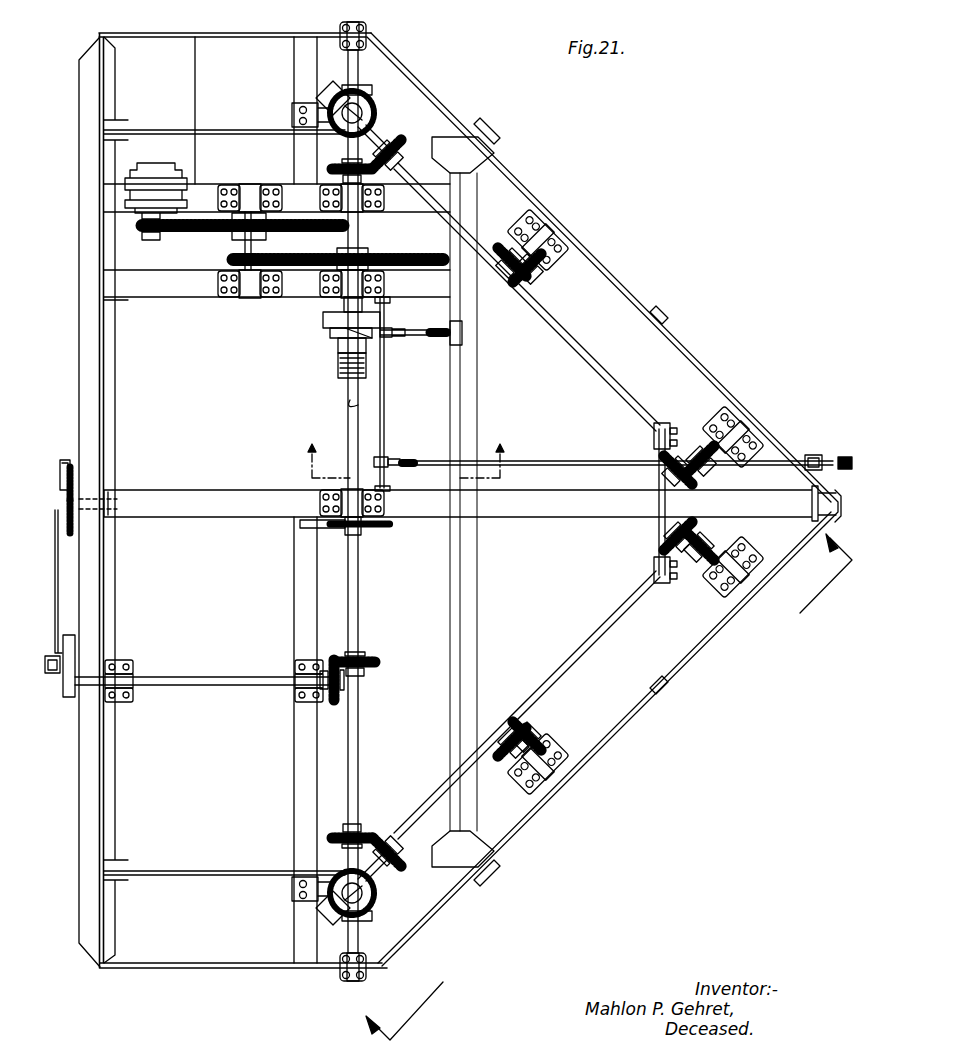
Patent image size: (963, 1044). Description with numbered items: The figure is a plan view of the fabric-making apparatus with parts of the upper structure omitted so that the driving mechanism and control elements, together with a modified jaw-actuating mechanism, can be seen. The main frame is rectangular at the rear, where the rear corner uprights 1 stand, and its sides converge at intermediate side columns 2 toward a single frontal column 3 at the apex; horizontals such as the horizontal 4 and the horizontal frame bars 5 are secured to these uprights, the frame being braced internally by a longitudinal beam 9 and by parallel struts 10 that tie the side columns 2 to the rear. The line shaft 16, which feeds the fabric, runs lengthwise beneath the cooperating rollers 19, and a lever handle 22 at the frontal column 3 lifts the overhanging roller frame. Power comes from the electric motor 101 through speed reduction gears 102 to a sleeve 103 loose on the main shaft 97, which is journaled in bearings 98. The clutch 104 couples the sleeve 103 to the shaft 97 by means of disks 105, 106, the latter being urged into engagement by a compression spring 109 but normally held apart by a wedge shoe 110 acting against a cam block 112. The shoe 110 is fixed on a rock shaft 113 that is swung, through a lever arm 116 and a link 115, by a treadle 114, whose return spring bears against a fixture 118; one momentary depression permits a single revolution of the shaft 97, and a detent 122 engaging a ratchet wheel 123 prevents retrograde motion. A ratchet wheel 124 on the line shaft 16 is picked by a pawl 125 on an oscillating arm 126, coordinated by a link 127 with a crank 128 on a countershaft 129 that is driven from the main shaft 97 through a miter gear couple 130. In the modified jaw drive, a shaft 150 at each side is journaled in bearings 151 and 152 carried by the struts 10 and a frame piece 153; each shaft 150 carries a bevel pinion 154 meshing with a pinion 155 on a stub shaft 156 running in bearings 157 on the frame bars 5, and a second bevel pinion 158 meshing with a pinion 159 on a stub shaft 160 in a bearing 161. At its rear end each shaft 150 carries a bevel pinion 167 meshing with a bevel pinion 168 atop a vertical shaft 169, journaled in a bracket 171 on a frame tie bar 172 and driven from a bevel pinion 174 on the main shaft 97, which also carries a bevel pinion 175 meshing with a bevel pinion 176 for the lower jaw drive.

The rear corner uprights 1 is at (140, 40).
The intermediate side columns 2 is at (478, 150).
The frontal column 3 is at (838, 512).
The horizontal 4 is at (610, 276).
The horizontal frame bars 5 is at (246, 34).
The longitudinal beam 9 is at (128, 491).
The parallel struts 10 is at (265, 133).
The line shaft 16 is at (115, 515).
The cooperating rollers 19 is at (405, 453).
The lever handle 22 is at (609, 787).
The main shaft 97 is at (360, 70).
The bearings 98 is at (366, 34).
The electric motor 101 is at (160, 165).
The speed reduction gears 102 is at (230, 260).
The sleeve 103 is at (362, 243).
The clutch 104 is at (364, 402).
The clutch disk 105 is at (322, 326).
The clutch disk 106 is at (330, 333).
The compression spring 109 is at (336, 370).
The wedge shoe 110 is at (388, 328).
The cam block 112 is at (338, 345).
The rock shaft 113 is at (386, 414).
The treadle 114 is at (827, 455).
The link 115 is at (560, 462).
The lever arm 116 is at (388, 460).
The fixture 118 is at (462, 345).
The detent 122 is at (300, 527).
The ratchet wheel 123 is at (384, 537).
The ratchet wheel 124 is at (74, 480).
The pawl 125 is at (72, 468).
The arm 126 is at (64, 460).
The link 127 is at (60, 574).
The crank 128 is at (68, 690).
The countershaft 129 is at (185, 690).
The miter gear couple 130 is at (366, 680).
The shaft 150 is at (585, 340).
The bearing 151 is at (376, 127).
The bearing 152 is at (654, 440).
The frame piece 153 is at (660, 538).
The bevel pinion 154 is at (672, 480).
The pinion 155 is at (728, 528).
The stub shaft 156 is at (732, 470).
The bearings 157 is at (718, 427).
The second bevel pinion 158 is at (515, 290).
The pinion 159 is at (500, 250).
The stub shaft 160 is at (538, 272).
The bearing 161 is at (525, 205).
The bevel pinion 167 is at (340, 80).
The bevel pinion 168 is at (374, 104).
The vertical shaft 169 is at (362, 115).
The bracket 171 is at (300, 104).
The frame tie bar 172 is at (295, 157).
The bevel pinion 174 is at (372, 88).
The bevel pinion 175 is at (337, 167).
The bevel pinion 176 is at (398, 158).